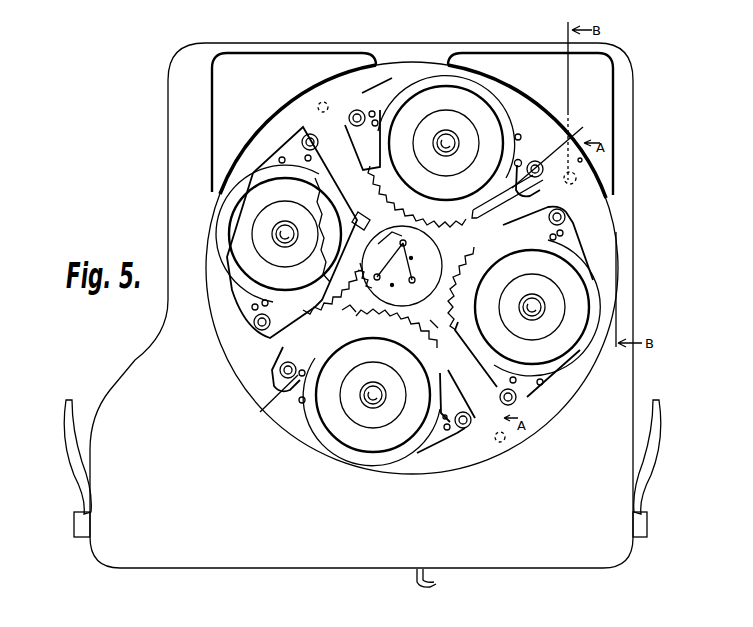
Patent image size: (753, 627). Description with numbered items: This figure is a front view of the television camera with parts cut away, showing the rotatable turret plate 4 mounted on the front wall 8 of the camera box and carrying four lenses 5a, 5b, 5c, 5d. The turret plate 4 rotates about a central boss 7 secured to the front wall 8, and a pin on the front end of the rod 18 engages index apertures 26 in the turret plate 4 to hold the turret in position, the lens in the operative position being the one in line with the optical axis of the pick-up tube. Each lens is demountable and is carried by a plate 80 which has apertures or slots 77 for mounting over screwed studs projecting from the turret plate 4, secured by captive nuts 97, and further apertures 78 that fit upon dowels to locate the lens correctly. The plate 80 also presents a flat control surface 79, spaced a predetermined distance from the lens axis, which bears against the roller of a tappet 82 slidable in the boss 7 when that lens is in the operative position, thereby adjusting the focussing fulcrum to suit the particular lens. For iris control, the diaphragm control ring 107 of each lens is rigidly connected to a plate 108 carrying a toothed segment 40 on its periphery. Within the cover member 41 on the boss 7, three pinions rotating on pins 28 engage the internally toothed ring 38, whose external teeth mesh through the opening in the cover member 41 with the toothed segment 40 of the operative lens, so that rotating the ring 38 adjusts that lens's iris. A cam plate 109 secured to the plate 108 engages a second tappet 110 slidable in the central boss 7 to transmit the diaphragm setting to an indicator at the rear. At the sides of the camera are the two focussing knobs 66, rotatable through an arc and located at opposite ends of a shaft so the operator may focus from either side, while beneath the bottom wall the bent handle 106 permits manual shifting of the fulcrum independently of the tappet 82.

The turret plate 4 is at (397, 70).
The lens 5a is at (298, 234).
The lens 5b is at (388, 396).
The lens 5c is at (540, 320).
The lens 5d is at (455, 137).
The central boss 7 is at (436, 326).
The front wall 8 is at (262, 48).
The rod 18 is at (590, 157).
The index apertures 26 is at (322, 100).
The pins 28 is at (408, 258).
The toothed ring 38 is at (368, 282).
The toothed segment 40 is at (462, 241).
The cover member 41 is at (422, 250).
The focussing knobs 66 is at (70, 414).
The apertures or slots 77 is at (354, 110).
The apertures 78 is at (380, 100).
The control surface 79 is at (352, 302).
The plate 80 is at (277, 150).
The tappet 82 is at (378, 255).
The captive nuts 97 is at (570, 172).
The bent handle 106 is at (440, 584).
The diaphragm control ring 107 is at (467, 97).
The plate 108 is at (452, 80).
The cam plate 109 is at (345, 208).
The second tappet 110 is at (364, 220).